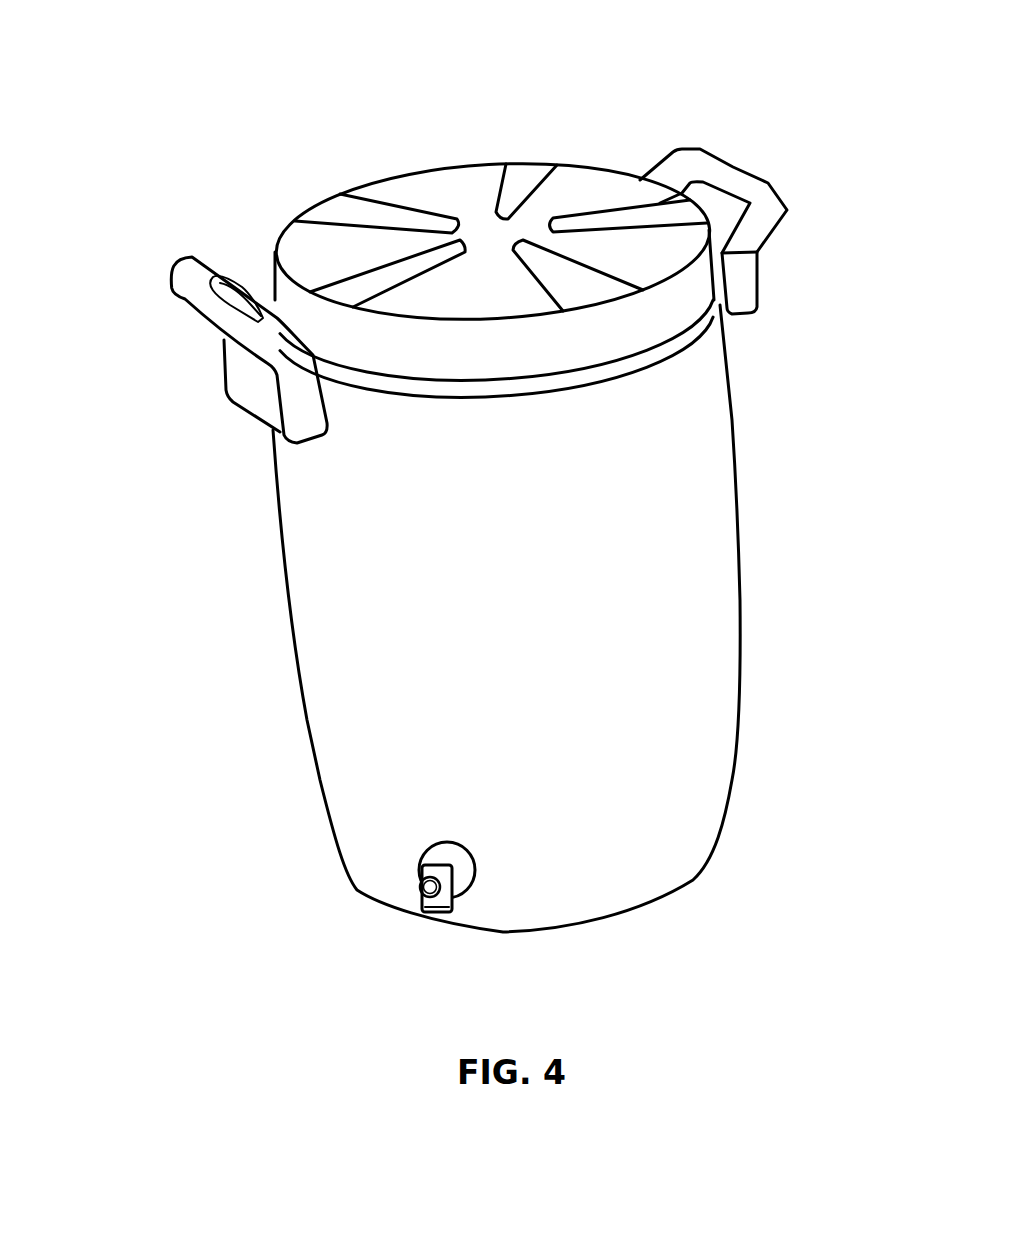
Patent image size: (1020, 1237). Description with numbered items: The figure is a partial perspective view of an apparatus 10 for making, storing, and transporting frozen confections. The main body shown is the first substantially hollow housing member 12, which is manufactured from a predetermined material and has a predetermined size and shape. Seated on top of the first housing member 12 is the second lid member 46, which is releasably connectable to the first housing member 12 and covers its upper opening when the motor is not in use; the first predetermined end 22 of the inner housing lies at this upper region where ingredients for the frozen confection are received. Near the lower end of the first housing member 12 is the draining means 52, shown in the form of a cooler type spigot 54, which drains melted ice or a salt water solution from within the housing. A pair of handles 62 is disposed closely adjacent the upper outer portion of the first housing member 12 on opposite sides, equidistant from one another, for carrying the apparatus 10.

The apparatus 10 is at (216, 136).
The first housing member 12 is at (678, 552).
The first predetermined end 22 is at (708, 348).
The second lid member 46 is at (465, 190).
The draining means 52 is at (455, 908).
The cooler type spigot 54 is at (427, 915).
The handles 62 is at (192, 300).